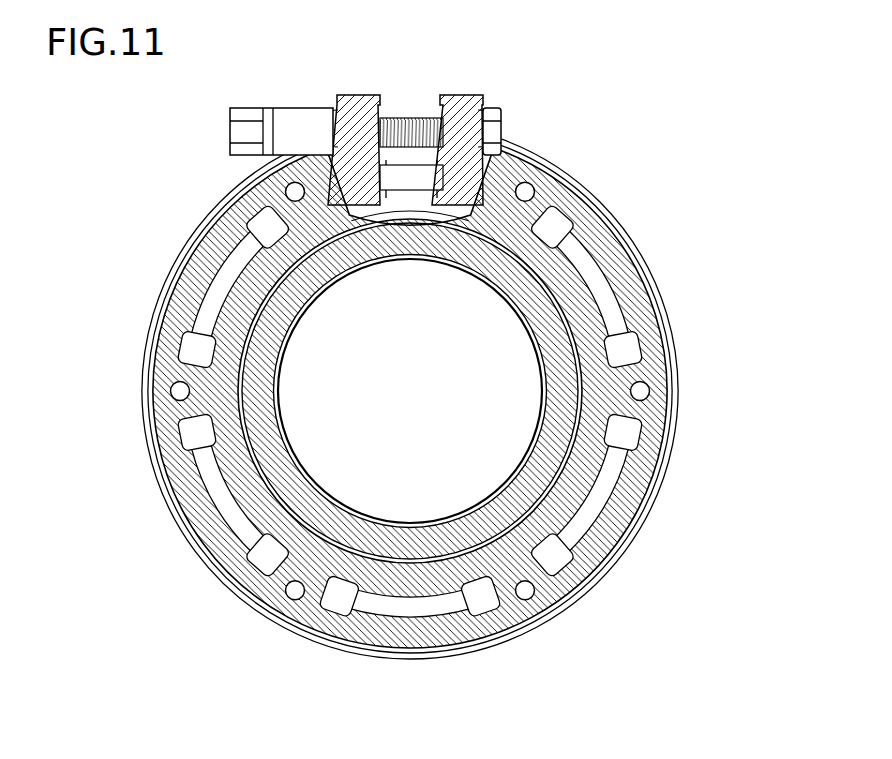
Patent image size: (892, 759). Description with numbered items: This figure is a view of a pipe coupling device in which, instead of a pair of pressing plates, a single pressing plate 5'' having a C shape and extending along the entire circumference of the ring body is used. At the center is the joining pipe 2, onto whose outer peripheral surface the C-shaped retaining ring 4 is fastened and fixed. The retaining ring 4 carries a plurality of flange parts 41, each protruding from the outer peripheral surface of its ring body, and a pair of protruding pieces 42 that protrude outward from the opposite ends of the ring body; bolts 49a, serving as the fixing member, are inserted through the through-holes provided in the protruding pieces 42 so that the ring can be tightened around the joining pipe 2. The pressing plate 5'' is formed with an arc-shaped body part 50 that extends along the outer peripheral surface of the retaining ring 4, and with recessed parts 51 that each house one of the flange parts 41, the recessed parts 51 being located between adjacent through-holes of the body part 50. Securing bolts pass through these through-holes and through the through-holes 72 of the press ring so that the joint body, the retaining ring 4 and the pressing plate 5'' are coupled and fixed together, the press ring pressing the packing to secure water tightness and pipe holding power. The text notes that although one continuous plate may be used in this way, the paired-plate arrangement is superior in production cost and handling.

The joining pipe 2 is at (388, 548).
The retaining ring 4 is at (430, 565).
The pressing plate 5'' is at (438, 399).
The flange parts 41 is at (227, 240).
The protruding pieces 42 is at (352, 94).
The bolts 49a is at (413, 117).
The body part 50 is at (402, 463).
The recessed parts 51 is at (205, 285).
The through-hole 72 is at (172, 390).